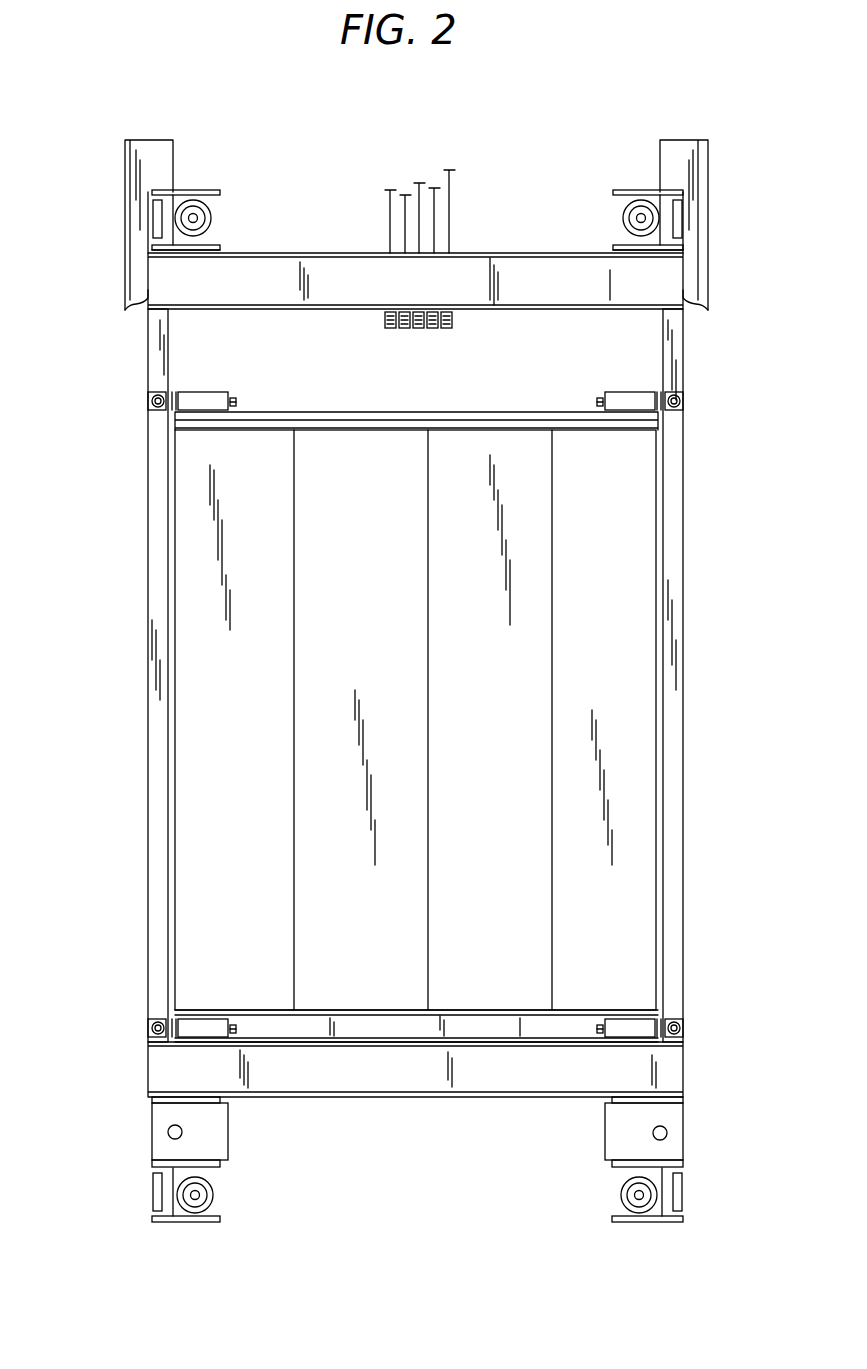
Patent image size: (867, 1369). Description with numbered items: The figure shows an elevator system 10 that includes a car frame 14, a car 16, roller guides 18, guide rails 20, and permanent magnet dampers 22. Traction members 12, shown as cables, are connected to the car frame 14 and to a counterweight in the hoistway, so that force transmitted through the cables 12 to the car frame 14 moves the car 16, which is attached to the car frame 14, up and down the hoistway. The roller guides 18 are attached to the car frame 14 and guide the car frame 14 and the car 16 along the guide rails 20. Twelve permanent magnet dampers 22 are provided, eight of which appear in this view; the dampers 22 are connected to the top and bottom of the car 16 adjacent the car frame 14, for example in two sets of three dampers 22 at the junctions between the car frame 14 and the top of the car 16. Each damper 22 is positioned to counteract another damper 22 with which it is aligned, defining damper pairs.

The elevator system 10 is at (305, 165).
The traction members 12 is at (388, 212).
The car frame 14 is at (664, 295).
The car 16 is at (546, 425).
The roller guides 18 is at (195, 190).
The guide rails 20 is at (155, 158).
The permanent magnet damper 22 is at (190, 416).